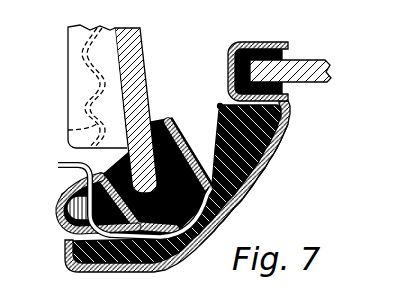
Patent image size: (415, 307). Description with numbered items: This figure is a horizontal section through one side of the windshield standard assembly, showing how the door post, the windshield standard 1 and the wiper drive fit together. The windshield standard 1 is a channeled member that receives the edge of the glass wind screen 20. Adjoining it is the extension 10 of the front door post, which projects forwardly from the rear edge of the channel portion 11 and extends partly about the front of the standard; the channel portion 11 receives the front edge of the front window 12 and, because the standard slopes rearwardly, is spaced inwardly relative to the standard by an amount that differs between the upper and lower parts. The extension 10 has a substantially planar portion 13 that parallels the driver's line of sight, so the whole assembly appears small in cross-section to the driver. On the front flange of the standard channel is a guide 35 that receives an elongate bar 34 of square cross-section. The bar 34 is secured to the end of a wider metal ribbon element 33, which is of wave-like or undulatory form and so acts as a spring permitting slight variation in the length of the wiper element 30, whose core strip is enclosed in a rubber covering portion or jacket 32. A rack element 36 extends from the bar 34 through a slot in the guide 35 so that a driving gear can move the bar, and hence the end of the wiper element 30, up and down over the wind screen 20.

The windshield standard 1 is at (184, 118).
The extension 10 is at (179, 269).
The channel portion 11 is at (277, 43).
The front window 12 is at (304, 86).
The planar portion 13 is at (234, 207).
The glass wind screen 20 is at (144, 52).
The wiper element 30 is at (68, 70).
The covering portion or jacket 32 is at (72, 102).
The metal ribbon elements 33 is at (68, 130).
The elongate bars 34 is at (70, 210).
The guides 35 is at (72, 227).
The rack element 36 is at (70, 177).